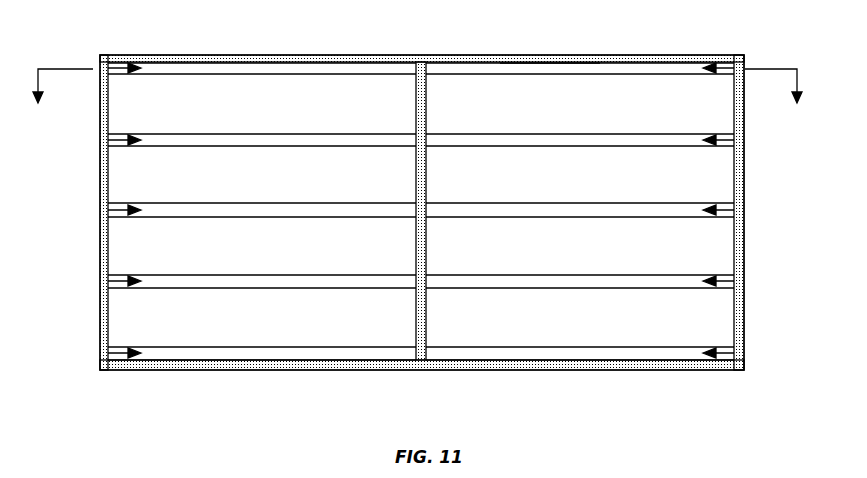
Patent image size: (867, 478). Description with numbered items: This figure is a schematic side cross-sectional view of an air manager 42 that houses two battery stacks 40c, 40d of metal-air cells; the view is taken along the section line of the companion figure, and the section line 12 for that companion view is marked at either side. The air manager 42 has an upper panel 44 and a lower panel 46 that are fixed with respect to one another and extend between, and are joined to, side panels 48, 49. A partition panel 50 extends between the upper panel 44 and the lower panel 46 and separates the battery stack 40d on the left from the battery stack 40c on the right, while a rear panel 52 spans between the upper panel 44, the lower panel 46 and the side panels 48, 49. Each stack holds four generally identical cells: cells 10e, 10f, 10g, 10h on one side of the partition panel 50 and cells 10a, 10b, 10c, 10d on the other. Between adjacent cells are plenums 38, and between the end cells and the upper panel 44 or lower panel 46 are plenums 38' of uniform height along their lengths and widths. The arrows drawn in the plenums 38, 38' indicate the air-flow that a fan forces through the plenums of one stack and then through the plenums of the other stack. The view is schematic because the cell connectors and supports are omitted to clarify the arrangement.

The metal-air cell 10a is at (622, 114).
The metal-air cell 10b is at (622, 189).
The metal-air cell 10c is at (622, 262).
The metal-air cell 10d is at (622, 332).
The metal-air cell 10e is at (270, 114).
The metal-air cell 10f is at (271, 189).
The metal-air cell 10g is at (270, 262).
The metal-air cell 10h is at (270, 332).
The section line 12— 12 is at (418, 97).
The plenum 38 is at (421, 228).
The plenum 38' is at (422, 211).
The battery stack 40c is at (659, 68).
The battery stack 40d is at (192, 68).
The air manager 42 is at (153, 384).
The upper panel 44 is at (380, 55).
The lower panel 46 is at (242, 370).
The side panel 48 is at (100, 62).
The side panel 49 is at (744, 62).
The partition panel 50 is at (428, 88).
The rear panel 52 is at (537, 70).